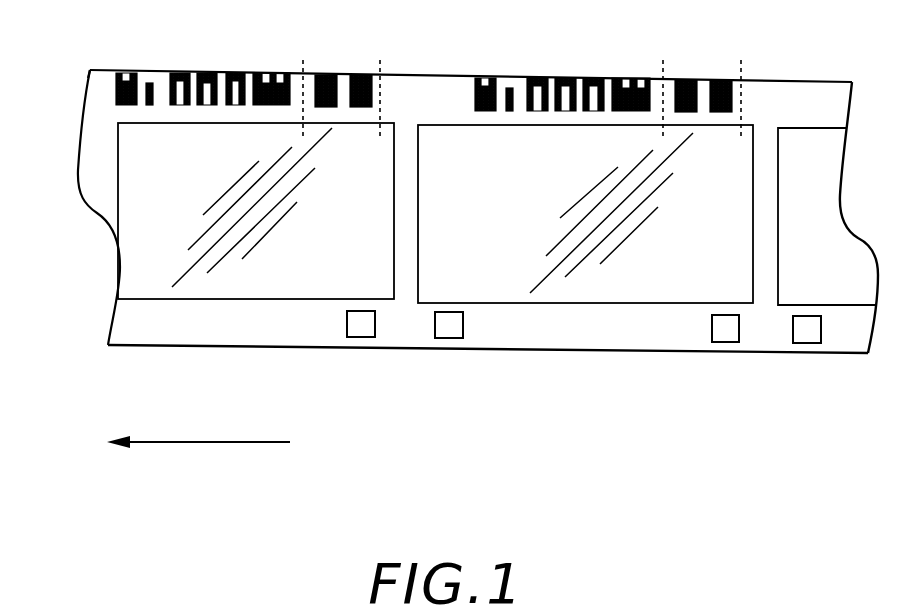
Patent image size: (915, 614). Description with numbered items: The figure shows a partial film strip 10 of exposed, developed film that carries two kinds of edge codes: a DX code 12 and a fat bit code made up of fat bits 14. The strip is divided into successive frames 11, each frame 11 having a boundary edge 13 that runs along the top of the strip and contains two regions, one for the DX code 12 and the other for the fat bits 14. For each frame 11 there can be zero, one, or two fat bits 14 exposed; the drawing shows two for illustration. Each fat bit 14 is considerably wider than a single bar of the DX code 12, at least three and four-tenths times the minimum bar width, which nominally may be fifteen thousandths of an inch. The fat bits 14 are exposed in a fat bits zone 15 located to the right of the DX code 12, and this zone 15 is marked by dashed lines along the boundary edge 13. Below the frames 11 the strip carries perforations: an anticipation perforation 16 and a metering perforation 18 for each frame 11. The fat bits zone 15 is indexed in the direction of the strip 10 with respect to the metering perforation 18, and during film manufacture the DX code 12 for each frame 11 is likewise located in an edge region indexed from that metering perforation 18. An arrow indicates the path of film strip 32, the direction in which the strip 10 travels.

The film strip 10 is at (575, 484).
The frame of strip 11 is at (233, 288).
The DX code 12 is at (470, 73).
The boundary edge having DX and fat bits codes 13 is at (90, 70).
The fat bits 14 is at (670, 74).
The fat bits zone 15 is at (303, 56).
The anticipation perforation 16 is at (360, 337).
The metering perforation 18 is at (445, 338).
The path of film strip 32 is at (212, 443).